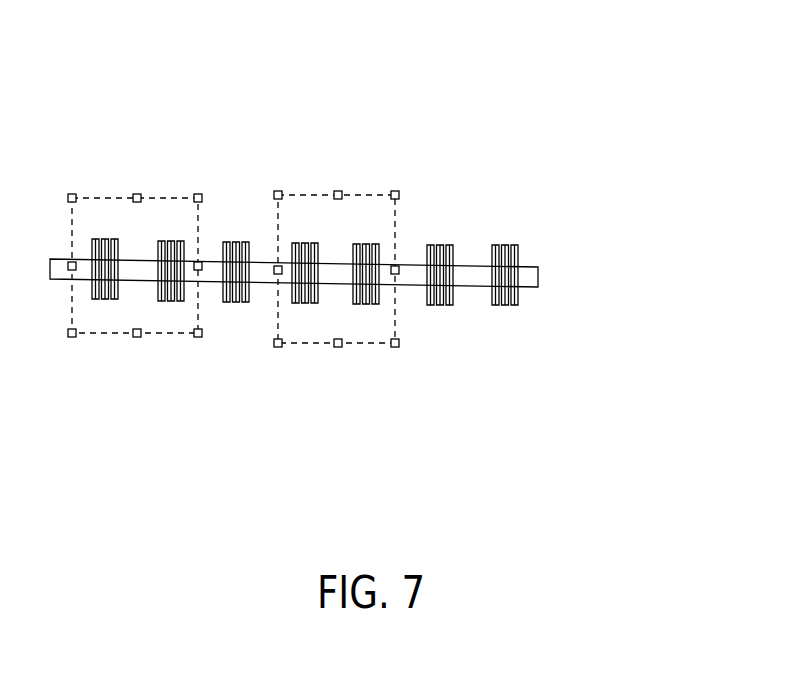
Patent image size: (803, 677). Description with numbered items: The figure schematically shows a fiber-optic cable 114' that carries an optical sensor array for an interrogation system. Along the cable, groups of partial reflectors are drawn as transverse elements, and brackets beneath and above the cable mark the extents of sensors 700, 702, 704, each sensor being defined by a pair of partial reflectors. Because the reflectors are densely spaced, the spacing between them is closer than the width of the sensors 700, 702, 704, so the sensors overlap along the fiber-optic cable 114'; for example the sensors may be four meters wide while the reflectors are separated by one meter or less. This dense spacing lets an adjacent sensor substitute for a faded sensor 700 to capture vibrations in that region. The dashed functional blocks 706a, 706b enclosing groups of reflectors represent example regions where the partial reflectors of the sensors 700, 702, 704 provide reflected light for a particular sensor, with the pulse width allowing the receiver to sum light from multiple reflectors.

The fiber-optic cable 114' is at (346, 272).
The sensor 700 is at (357, 355).
The sensor 702 is at (503, 453).
The sensor 704 is at (434, 158).
The functional block 706a is at (85, 194).
The functional block 706b is at (400, 213).